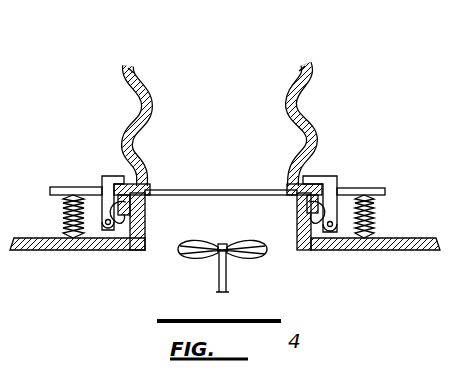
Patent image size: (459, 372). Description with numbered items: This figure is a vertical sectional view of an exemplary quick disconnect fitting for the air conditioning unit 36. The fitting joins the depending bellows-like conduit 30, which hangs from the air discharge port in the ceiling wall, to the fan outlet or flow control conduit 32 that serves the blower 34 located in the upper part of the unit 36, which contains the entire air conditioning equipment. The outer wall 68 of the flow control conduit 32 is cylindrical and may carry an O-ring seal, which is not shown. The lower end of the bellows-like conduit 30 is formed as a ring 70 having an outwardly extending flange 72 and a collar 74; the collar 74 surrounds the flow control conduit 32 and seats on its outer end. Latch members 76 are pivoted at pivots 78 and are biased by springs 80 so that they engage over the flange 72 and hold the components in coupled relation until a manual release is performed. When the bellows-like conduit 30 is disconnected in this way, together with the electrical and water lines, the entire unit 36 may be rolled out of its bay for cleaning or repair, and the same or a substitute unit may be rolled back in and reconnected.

The bellows-like conduit 30 is at (318, 78).
The flow control conduit 32 is at (146, 207).
The blower 34 is at (250, 257).
The unit 36 is at (45, 254).
The outer wall 68 is at (128, 238).
The ring 70 is at (288, 163).
The outwardly extending flange 72 is at (137, 168).
The collar 74 is at (124, 222).
The latch members 76 is at (103, 177).
The pivot 78 is at (108, 229).
The springs 80 is at (74, 231).